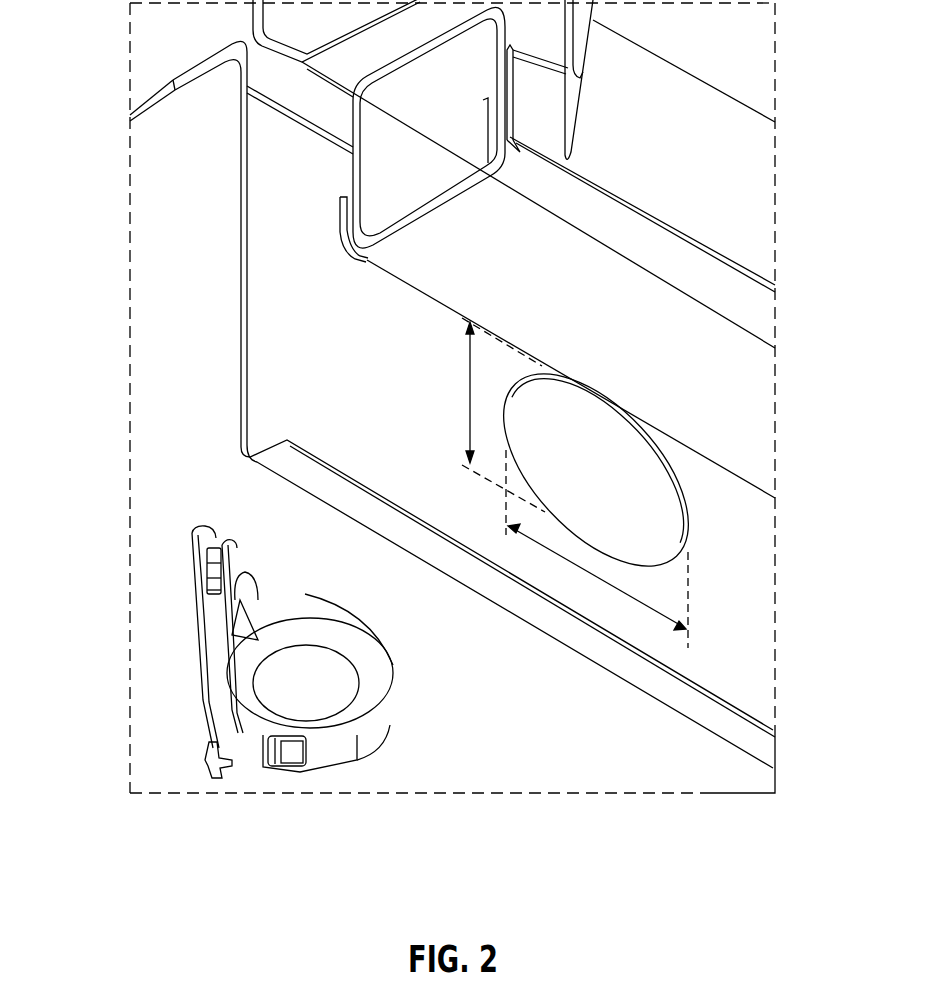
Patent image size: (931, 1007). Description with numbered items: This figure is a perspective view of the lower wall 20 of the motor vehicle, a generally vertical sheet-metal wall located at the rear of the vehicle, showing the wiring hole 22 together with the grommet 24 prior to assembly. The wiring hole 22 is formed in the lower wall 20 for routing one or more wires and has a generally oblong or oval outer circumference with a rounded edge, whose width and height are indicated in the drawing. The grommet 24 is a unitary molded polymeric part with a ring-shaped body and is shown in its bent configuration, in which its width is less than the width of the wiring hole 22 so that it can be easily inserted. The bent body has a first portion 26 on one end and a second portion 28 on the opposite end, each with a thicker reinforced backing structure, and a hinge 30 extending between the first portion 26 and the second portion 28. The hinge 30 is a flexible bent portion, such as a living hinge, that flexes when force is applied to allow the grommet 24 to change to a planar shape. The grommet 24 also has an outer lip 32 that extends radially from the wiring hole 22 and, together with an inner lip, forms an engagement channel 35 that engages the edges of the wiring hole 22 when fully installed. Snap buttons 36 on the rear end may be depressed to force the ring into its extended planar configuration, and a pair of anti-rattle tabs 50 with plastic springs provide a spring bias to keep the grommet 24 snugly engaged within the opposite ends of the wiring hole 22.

The lower wall 20 is at (240, 320).
The wiring hole 22 is at (683, 485).
The grommet 24 is at (188, 630).
The first portion 26 is at (203, 550).
The second portion 28 is at (400, 660).
The hinge 30 is at (250, 593).
The outer lip 32 is at (240, 620).
The engagement channel 35 is at (347, 667).
The snap buttons 36 is at (250, 630).
The anti-rattle tabs 50 is at (213, 580).